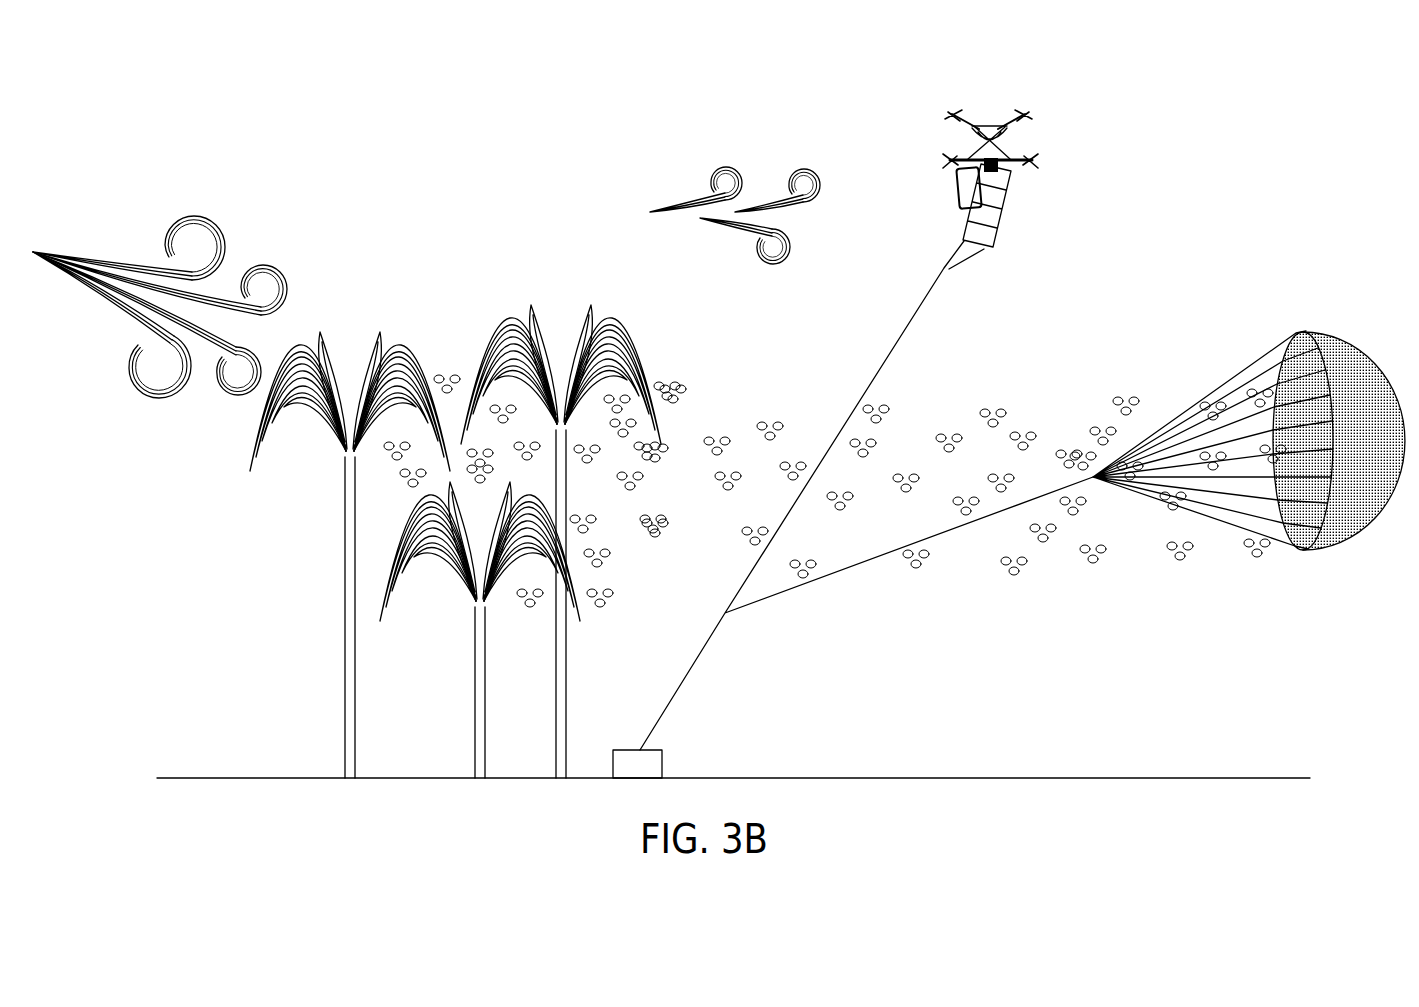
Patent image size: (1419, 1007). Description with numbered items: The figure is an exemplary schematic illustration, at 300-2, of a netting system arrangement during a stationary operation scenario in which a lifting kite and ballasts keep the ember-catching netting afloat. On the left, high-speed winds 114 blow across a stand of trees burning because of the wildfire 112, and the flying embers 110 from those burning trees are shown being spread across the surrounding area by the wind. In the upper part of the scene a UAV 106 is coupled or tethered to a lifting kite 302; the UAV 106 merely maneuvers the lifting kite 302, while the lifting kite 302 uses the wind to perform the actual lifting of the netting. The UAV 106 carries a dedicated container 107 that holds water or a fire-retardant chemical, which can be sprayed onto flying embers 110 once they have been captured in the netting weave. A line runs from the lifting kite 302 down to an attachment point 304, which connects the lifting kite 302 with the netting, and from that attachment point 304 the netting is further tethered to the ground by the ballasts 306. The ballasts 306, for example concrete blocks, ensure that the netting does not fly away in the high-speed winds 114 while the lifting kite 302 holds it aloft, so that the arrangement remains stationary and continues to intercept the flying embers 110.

The netting system arrangement 300-2 is at (1137, 102).
The UAV 106 is at (990, 128).
The dedicated container 107 is at (958, 179).
The flying embers 110 is at (770, 420).
The wildfire 112 is at (396, 343).
The high-speed winds 114 is at (130, 245).
The lifting kite 302 is at (1012, 198).
The attachment point 304 is at (725, 608).
The ballasts 306 is at (626, 748).